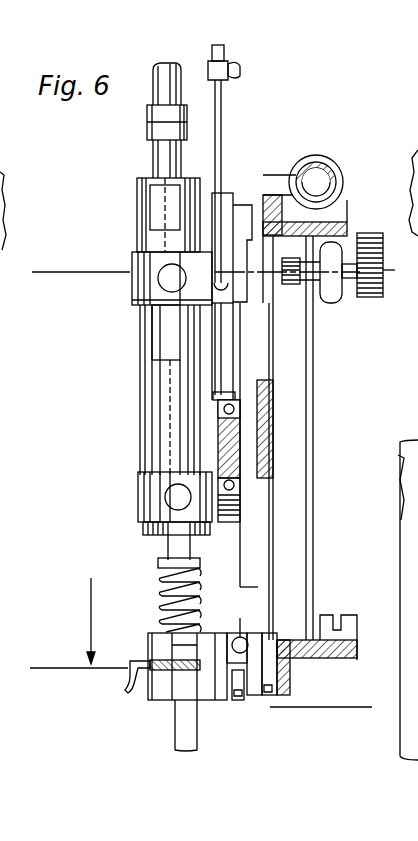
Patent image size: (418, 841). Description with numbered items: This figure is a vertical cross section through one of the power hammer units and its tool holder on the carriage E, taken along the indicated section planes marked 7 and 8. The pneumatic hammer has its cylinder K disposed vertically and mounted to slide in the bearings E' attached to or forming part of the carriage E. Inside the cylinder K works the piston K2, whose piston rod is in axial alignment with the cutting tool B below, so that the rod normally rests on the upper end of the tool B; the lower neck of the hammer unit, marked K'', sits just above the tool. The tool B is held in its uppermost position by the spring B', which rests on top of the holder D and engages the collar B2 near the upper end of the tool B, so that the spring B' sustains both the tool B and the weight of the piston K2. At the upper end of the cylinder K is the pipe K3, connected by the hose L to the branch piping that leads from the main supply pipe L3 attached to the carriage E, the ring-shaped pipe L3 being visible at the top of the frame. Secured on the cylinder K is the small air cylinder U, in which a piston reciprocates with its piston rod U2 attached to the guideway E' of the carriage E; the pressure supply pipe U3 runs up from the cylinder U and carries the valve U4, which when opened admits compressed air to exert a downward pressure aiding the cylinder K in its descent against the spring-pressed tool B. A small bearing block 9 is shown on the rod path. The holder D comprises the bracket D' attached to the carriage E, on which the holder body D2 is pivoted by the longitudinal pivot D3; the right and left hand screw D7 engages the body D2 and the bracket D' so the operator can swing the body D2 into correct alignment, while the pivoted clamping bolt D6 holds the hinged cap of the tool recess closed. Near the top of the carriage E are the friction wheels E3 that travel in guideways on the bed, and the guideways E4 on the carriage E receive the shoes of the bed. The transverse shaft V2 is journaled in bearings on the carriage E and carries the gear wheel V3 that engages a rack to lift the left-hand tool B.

The section line 7- 7 is at (394, 272).
The section line 8- 8 is at (202, 652).
The hose L is at (156, 98).
The pipe K3 is at (158, 165).
The piston K2 is at (160, 343).
The cylinder K is at (160, 417).
The spindle lower neck K'' is at (175, 516).
The collar B2 is at (200, 565).
The spring B' is at (189, 600).
The holder D is at (173, 666).
The pivoted clamping bolt D6 is at (130, 668).
The holder body D2 is at (200, 680).
The cutting tool B is at (196, 725).
The pivot D3 is at (237, 634).
The right and left hand screw D7 is at (248, 700).
The bracket D' is at (266, 684).
The valve U4 is at (228, 79).
The pressure supply pipe U3 is at (221, 133).
The small air cylinder U is at (241, 196).
The piston rod U2 is at (222, 340).
The bearing block 9 is at (226, 500).
The main supply pipe L3 is at (339, 180).
The carriage E is at (330, 445).
The bearings E' is at (275, 438).
The guideways E4 is at (349, 613).
The friction wheels E3 is at (336, 303).
The shaft V2 is at (383, 253).
The pinion V3 is at (365, 298).